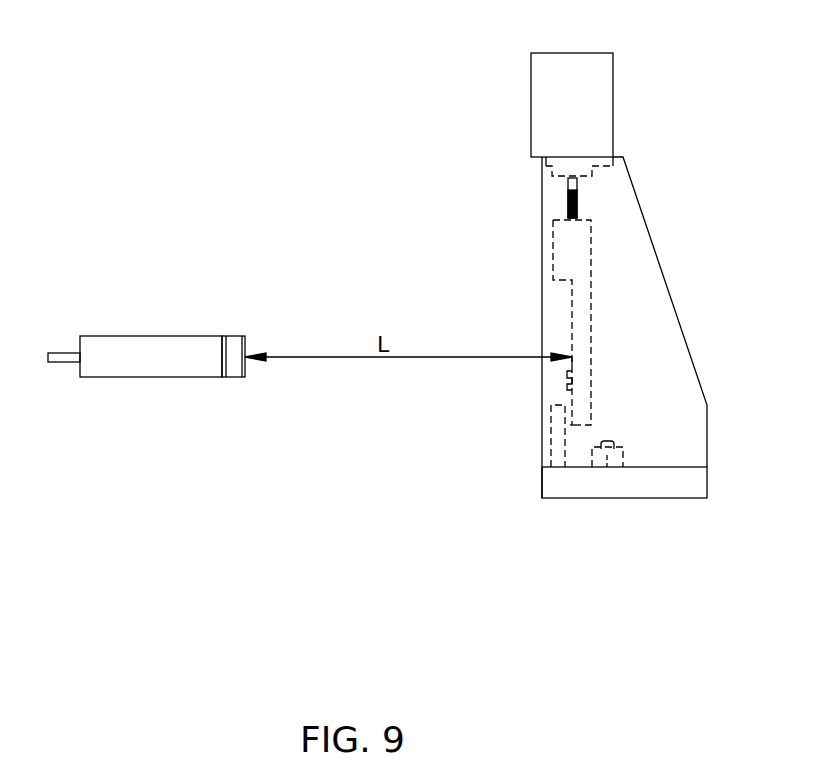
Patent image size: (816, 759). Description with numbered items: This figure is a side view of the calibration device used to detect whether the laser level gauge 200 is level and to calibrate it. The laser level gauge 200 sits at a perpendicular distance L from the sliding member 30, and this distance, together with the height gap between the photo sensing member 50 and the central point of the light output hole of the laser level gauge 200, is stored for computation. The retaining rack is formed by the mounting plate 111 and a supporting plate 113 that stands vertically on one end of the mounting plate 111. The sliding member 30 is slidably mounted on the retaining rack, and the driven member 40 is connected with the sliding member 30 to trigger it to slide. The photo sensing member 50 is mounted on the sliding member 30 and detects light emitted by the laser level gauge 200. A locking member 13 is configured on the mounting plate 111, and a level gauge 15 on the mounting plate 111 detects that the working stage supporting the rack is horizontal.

The driven member 40 is at (555, 94).
The sliding member 30 is at (558, 243).
The supporting plate 113 is at (633, 320).
The photo sensing member 50 is at (565, 389).
The locking member 13 is at (553, 450).
The level gauge 15 is at (607, 473).
The mounting plate 111 is at (573, 483).
The laser level gauge 200 is at (146, 370).